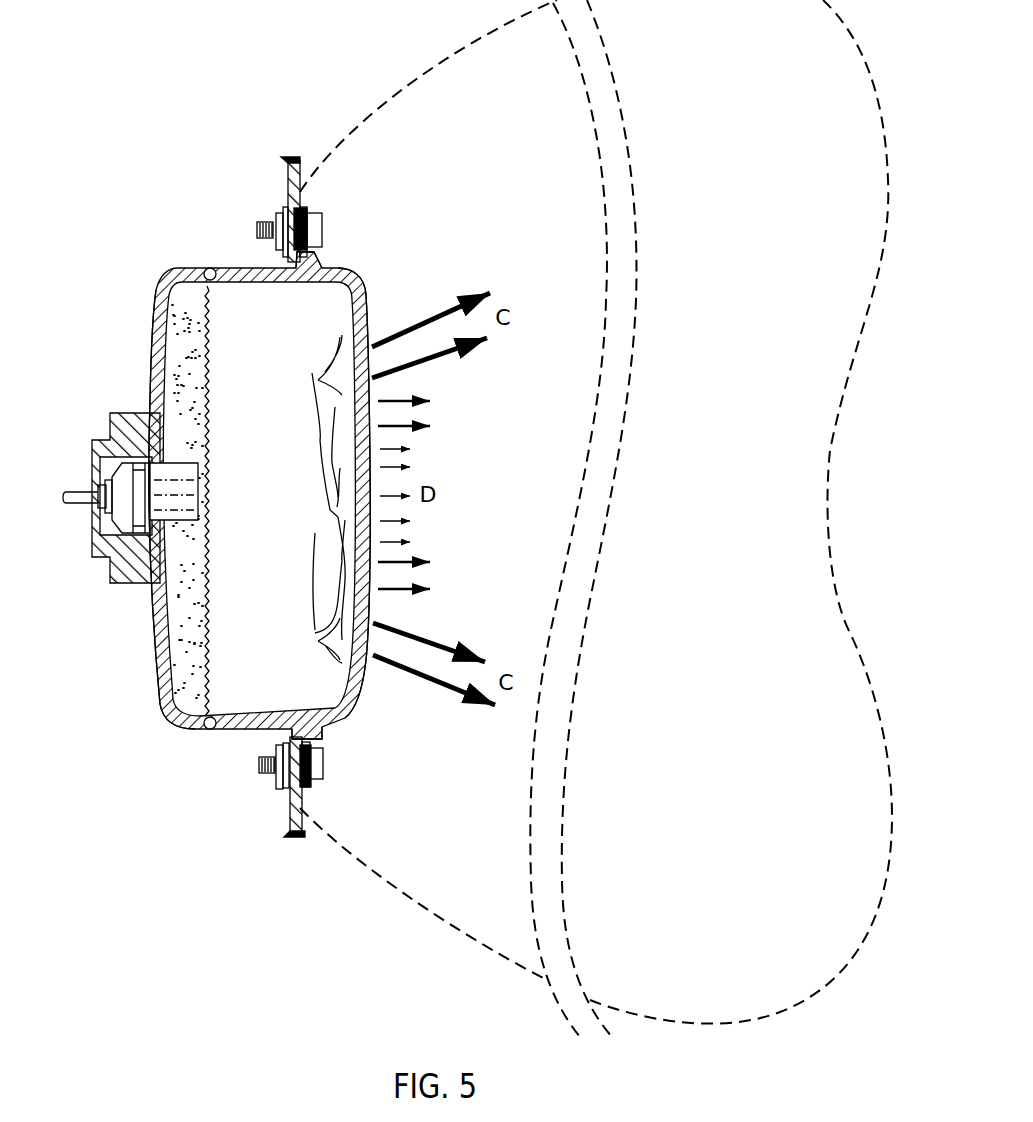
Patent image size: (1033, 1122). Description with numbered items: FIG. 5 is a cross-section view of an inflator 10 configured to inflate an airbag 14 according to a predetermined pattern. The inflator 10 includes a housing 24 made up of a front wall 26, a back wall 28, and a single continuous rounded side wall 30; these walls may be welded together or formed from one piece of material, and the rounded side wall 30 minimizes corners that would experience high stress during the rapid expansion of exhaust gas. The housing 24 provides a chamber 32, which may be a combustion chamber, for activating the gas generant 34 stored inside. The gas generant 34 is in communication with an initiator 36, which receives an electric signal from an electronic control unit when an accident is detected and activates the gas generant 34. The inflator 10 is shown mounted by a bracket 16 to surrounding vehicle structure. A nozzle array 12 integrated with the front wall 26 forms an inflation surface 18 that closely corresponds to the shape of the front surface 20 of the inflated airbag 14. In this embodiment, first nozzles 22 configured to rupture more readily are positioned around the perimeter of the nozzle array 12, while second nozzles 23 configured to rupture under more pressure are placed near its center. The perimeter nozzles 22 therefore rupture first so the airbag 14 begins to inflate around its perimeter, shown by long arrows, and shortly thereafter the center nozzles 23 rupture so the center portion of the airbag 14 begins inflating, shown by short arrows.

The inflator 10 is at (210, 226).
The nozzle array 12 is at (318, 567).
The airbag 14 is at (370, 120).
The mounting bracket 16 is at (300, 205).
The inflation surface 18 is at (370, 693).
The front surface 20 is at (830, 480).
The first nozzles 22 is at (318, 380).
The second nozzles 23 is at (337, 507).
The housing 24 is at (157, 293).
The front wall 26 is at (365, 315).
The back wall 28 is at (157, 343).
The side wall 30 is at (318, 268).
The chamber 32 is at (265, 503).
The gas generant 34 is at (168, 626).
The initiator 36 is at (100, 477).